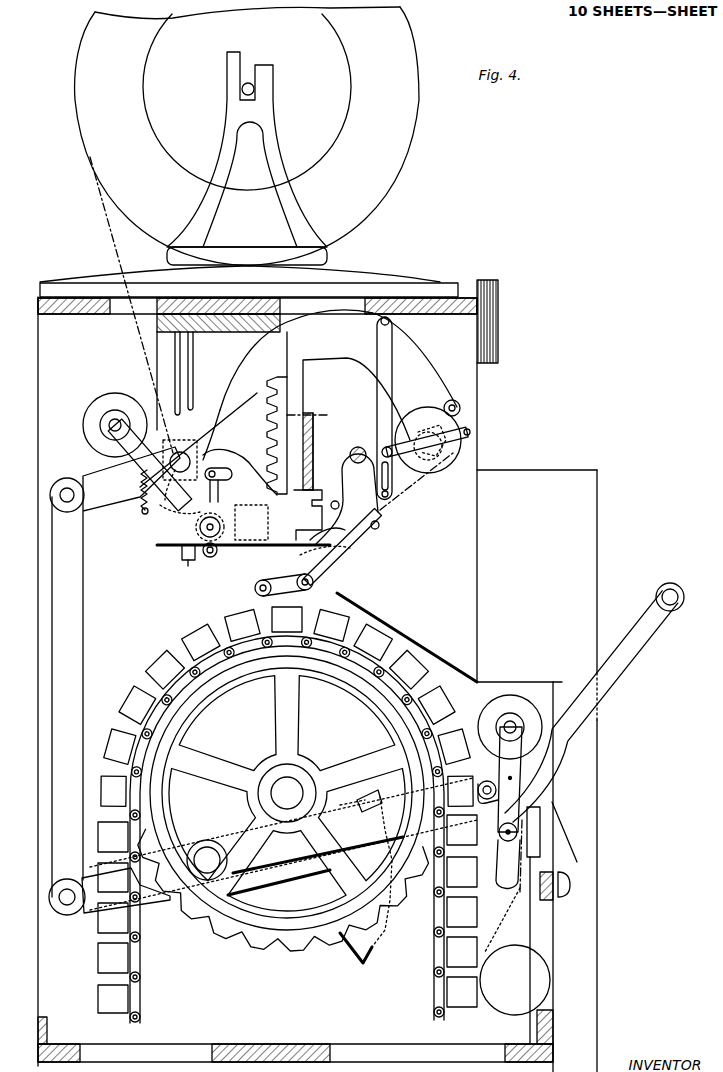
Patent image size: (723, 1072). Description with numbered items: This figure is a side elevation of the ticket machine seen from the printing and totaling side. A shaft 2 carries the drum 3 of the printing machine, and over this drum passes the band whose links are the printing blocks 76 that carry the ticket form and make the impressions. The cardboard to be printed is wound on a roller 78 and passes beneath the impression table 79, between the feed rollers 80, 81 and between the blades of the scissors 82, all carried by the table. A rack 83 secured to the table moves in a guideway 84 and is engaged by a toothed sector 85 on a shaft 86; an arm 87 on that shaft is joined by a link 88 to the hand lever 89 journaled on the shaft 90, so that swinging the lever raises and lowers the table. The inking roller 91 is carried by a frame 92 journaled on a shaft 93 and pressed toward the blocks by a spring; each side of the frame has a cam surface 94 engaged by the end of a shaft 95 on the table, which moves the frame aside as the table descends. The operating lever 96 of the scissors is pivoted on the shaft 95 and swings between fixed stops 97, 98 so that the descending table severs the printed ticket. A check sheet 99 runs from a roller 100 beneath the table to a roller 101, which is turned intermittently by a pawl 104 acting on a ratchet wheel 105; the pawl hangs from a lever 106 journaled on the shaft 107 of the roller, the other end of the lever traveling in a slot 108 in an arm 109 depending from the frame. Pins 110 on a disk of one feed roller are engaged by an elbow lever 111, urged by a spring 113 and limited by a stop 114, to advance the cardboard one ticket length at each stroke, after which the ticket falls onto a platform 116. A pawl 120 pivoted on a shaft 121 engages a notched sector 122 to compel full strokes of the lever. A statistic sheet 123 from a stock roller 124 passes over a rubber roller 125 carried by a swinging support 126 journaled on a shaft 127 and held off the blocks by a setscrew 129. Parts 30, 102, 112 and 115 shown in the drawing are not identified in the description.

The roller 78 is at (240, 144).
The roller 100 is at (115, 393).
The shaft 86 is at (184, 454).
The stop 114 is at (193, 460).
The toothed sector 85 is at (277, 447).
The rack 83 is at (314, 415).
The guideway 84 is at (313, 445).
The shaft 93 is at (359, 447).
The arm 109 is at (380, 394).
The pawl 104 is at (460, 421).
The lever 106 is at (471, 432).
The roller 101 is at (461, 453).
The ratchet wheel 105 is at (449, 452).
The shaft 107 is at (437, 466).
The slot 108 is at (392, 457).
The impression table 79 is at (250, 492).
The slotted bar 115 is at (226, 480).
The shaft 95 is at (334, 500).
The fixed stop 97 is at (346, 499).
The operating lever 96 is at (383, 511).
The fixed stop 98 is at (375, 529).
The arm 87 is at (115, 479).
The spring 113 is at (142, 511).
The link 112 is at (180, 507).
The check sheet 99 is at (157, 545).
The feed roller 80 is at (182, 552).
The elbow lever 111 is at (189, 566).
The pins 110 is at (220, 532).
The block 102 is at (256, 540).
The scissors 82 is at (300, 541).
The cam surface 94 is at (322, 541).
The frame 92 is at (340, 556).
The feed roller 81 is at (213, 557).
The inking roller 91 is at (255, 589).
The platform 116 is at (455, 665).
The printing blocks 76 is at (129, 701).
The drum 3 is at (235, 662).
The rubber roller 125 is at (490, 716).
The lever 89 is at (594, 702).
The link 88 is at (109, 706).
The shaft 2 is at (283, 803).
The shaft 90 is at (207, 845).
The pawl 120 is at (381, 800).
The shaft 121 is at (362, 808).
The pivot 30 is at (496, 779).
The swinging support 126 is at (510, 778).
The statistic sheet 123 is at (574, 832).
The shaft 127 is at (500, 833).
The setscrew 129 is at (528, 890).
The notched sector 122 is at (373, 948).
The stock roller 124 is at (515, 980).